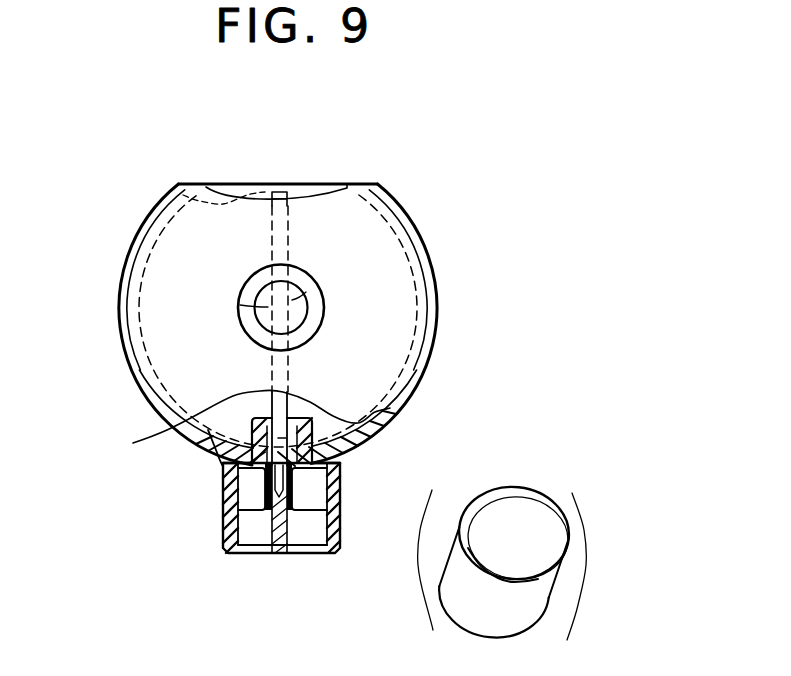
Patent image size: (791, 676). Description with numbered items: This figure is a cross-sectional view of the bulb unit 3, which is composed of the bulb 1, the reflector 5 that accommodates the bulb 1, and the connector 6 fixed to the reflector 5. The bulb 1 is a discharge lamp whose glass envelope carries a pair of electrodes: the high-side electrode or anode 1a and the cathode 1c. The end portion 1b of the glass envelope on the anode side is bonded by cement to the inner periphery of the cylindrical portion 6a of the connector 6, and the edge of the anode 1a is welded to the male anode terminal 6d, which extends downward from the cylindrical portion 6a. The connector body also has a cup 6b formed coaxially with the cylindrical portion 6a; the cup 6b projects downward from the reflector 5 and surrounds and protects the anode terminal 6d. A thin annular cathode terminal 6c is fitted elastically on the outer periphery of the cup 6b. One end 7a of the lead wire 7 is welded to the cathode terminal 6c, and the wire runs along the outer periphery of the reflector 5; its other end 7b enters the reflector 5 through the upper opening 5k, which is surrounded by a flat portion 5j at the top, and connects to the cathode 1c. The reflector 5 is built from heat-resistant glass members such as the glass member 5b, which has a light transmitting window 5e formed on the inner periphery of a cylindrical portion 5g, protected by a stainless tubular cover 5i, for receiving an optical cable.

The bulb 1 is at (240, 305).
The high-side electrode (anode) 1a is at (342, 466).
The end portion of the glass envelope 1b is at (390, 408).
The cathode 1c is at (329, 159).
The bulb unit 3 is at (422, 205).
The reflector 5 is at (183, 228).
The heat resistant glass member 5b is at (152, 297).
The light transmitting window 5e is at (300, 302).
The cylindrical portion 5g is at (297, 287).
The stainless tubular cover 5i is at (300, 333).
The flat portion 5j is at (197, 183).
The upper opening 5k is at (242, 183).
The connector 6 is at (346, 488).
The cylindrical portion 6a is at (220, 430).
The cup 6b is at (224, 537).
The annular cathode terminal 6c is at (224, 507).
The anode terminal 6d is at (287, 518).
The lead wire 7 is at (133, 443).
The one end of the lead wire 7a is at (224, 483).
The other end of the lead wire 7b is at (283, 192).